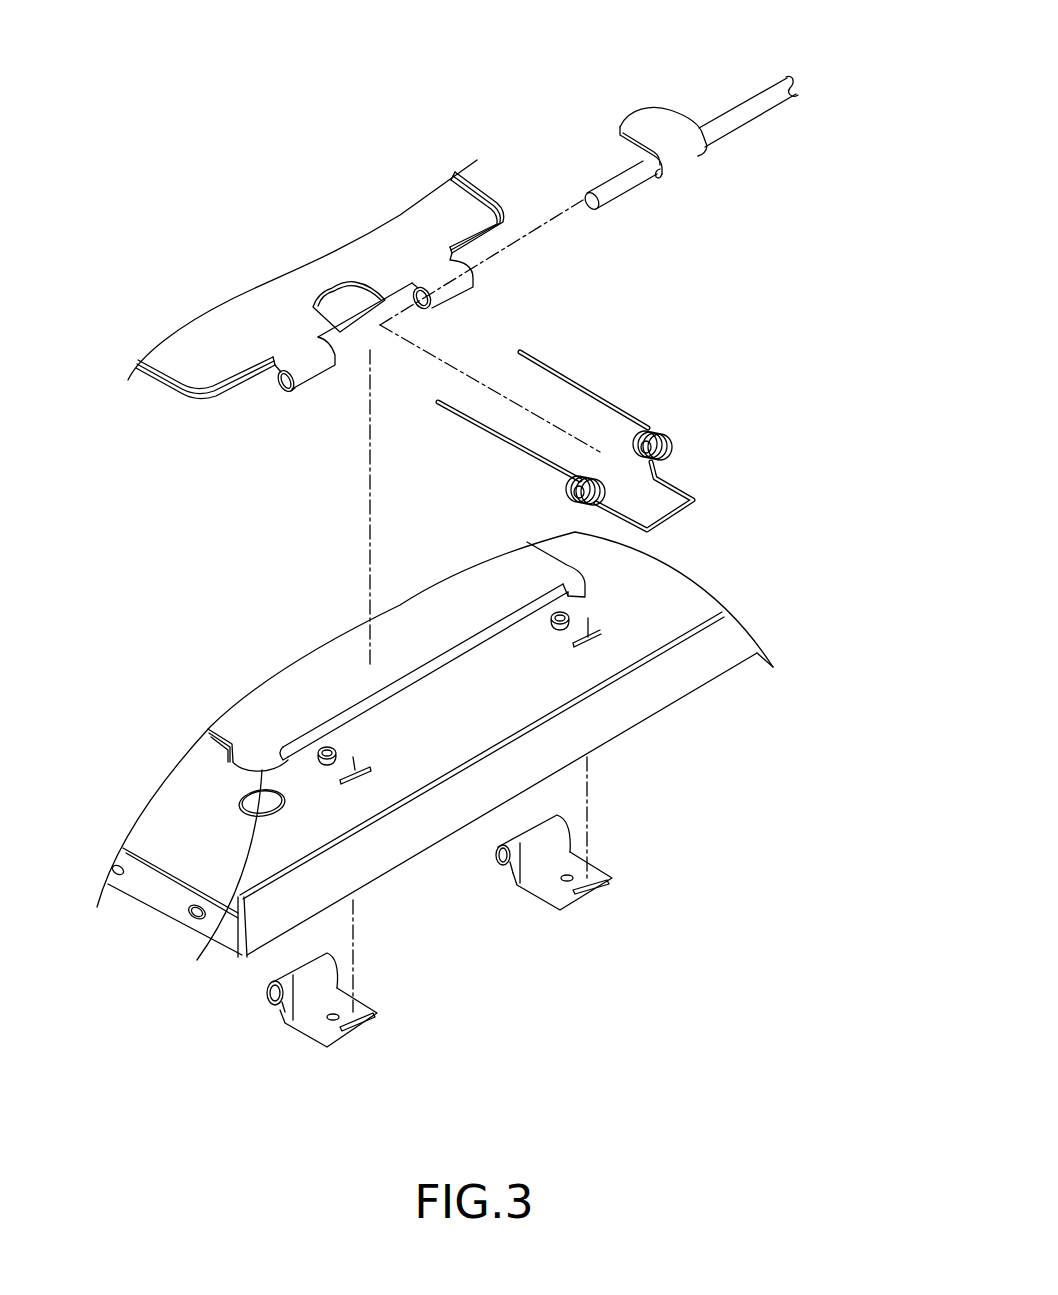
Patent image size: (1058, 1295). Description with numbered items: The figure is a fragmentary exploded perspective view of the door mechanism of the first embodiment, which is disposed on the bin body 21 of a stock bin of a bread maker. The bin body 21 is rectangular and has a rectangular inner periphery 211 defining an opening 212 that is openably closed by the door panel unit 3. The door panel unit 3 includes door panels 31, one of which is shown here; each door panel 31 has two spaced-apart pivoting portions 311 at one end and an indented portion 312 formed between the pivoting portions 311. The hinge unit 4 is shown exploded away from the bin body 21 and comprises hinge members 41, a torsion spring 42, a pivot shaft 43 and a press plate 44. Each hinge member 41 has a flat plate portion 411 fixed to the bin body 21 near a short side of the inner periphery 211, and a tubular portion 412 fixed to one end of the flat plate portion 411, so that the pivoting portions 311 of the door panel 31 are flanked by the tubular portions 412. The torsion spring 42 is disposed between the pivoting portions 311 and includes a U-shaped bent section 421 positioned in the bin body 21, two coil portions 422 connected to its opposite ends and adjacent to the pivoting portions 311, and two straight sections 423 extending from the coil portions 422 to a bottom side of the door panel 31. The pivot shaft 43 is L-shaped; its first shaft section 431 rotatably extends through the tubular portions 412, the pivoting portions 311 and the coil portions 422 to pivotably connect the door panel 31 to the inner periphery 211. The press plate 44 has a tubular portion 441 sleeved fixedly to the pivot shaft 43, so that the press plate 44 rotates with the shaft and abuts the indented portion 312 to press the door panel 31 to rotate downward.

The bin body 21 is at (180, 847).
The inner periphery 211 is at (200, 958).
The opening 212 is at (252, 735).
The door panel unit 3 is at (506, 172).
The door panel 31 is at (207, 366).
The pivoting portion 311 is at (452, 287).
The indented portion 312 is at (347, 305).
The hinge unit 4 is at (700, 82).
The pivot shaft 43 is at (718, 148).
The first shaft section 431 is at (752, 108).
The press plate 44 is at (640, 125).
The tubular portion 441 is at (668, 178).
The torsion spring 42 is at (688, 470).
The U-shaped bent section 421 is at (670, 513).
The coil portion 422 is at (668, 442).
The straight section 423 is at (575, 383).
The hinge member 41 is at (590, 925).
The flat plate portion 411 is at (593, 872).
The tubular portion 412 is at (525, 845).